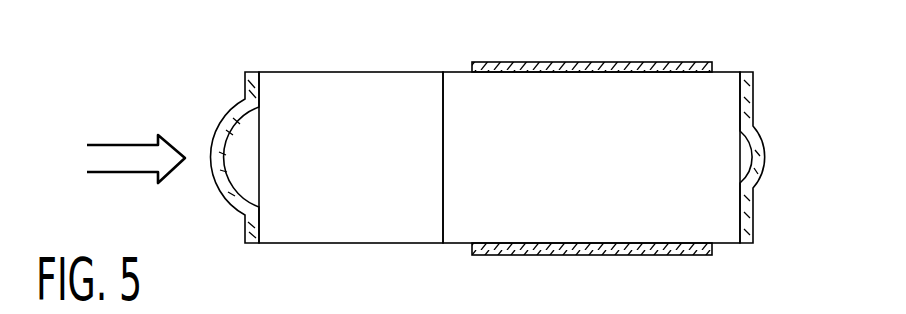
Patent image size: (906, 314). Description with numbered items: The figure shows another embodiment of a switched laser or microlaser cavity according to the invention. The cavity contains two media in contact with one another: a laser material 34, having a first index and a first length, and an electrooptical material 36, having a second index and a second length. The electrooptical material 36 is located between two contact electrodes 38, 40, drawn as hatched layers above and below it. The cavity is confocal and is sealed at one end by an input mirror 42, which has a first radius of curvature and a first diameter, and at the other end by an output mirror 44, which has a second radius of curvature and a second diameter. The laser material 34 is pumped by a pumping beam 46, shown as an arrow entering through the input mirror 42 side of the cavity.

The laser material 34 is at (328, 85).
The electrooptical material 36 is at (722, 87).
The contact electrode 38 is at (622, 67).
The contact electrode 40 is at (572, 247).
The input mirror 42 is at (230, 200).
The output mirror 44 is at (748, 203).
The pumping beam 46 is at (125, 153).